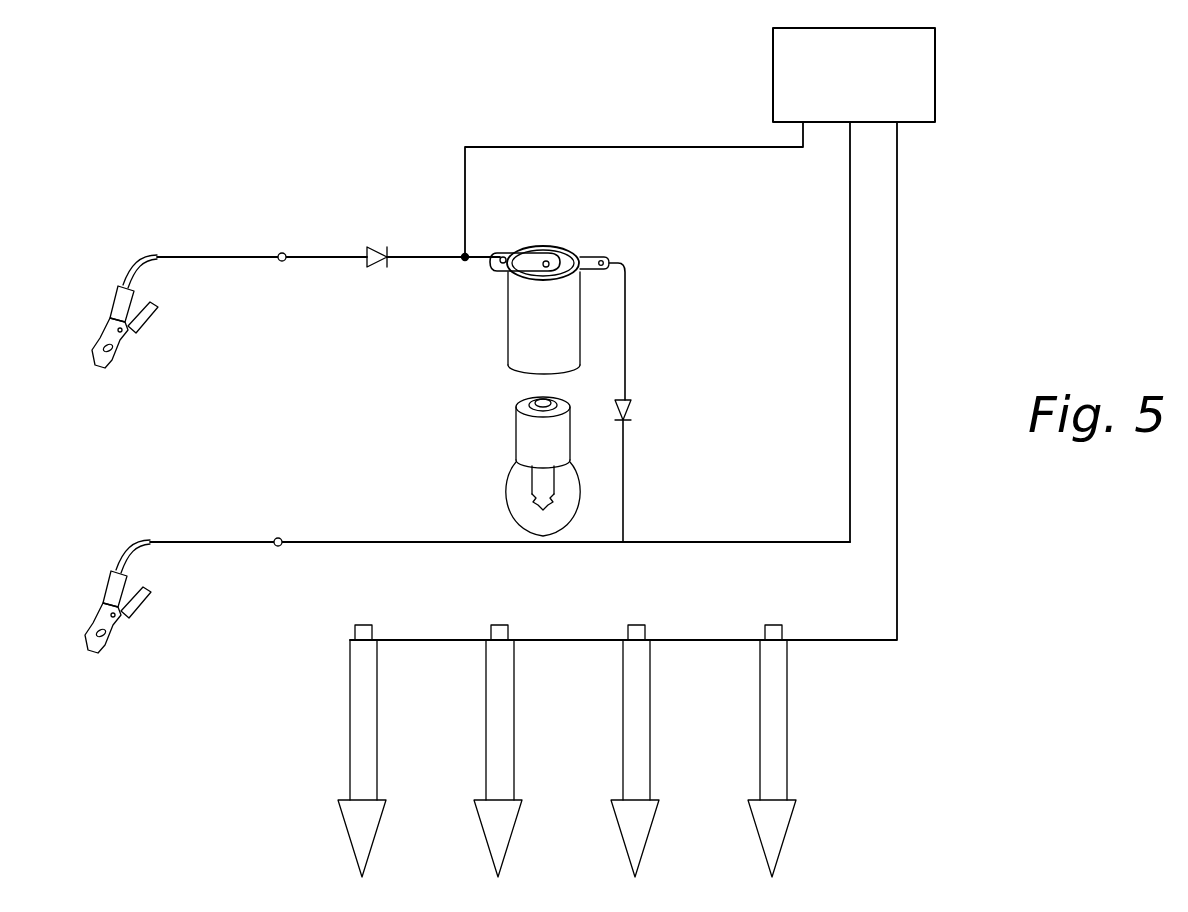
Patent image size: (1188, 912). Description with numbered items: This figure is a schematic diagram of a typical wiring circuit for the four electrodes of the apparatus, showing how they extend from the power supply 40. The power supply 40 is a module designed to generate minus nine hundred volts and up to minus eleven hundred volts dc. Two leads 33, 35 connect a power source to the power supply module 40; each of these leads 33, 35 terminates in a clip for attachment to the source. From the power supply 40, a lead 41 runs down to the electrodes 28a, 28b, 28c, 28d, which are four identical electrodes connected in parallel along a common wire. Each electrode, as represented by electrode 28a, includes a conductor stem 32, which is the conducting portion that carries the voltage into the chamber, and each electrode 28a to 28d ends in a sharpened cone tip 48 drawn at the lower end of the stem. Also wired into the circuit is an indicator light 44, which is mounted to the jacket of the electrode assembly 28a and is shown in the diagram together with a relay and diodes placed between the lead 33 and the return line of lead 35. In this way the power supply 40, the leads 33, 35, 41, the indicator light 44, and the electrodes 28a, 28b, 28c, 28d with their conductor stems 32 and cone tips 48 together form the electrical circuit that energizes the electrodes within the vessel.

The electrode 28a is at (362, 738).
The electrode 28b is at (497, 733).
The electrode 28c is at (628, 732).
The electrode 28d is at (770, 720).
The conductor stem 32 is at (632, 668).
The lead 33 is at (193, 257).
The lead 35 is at (178, 542).
The power supply 40 is at (920, 105).
The lead 41 is at (897, 358).
The indicator light 44 is at (523, 512).
The sharpened cone tip 48 is at (495, 833).